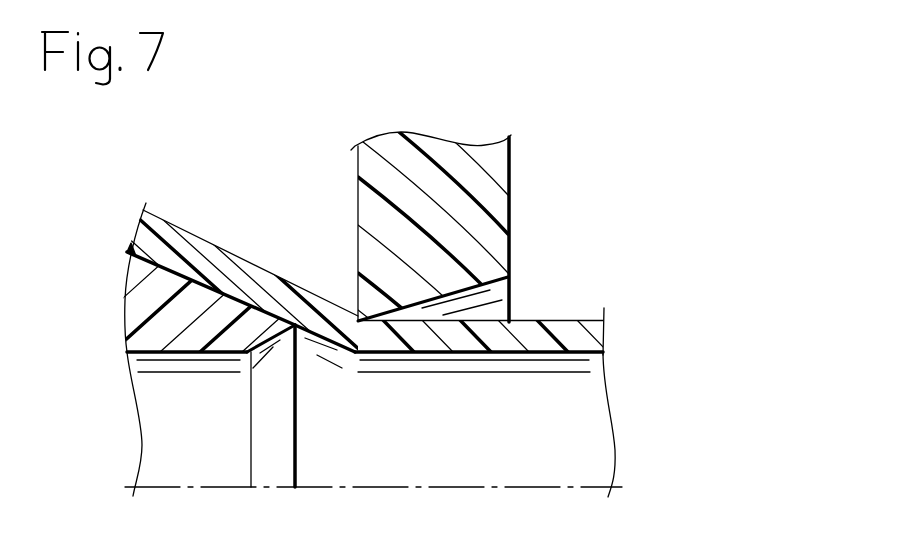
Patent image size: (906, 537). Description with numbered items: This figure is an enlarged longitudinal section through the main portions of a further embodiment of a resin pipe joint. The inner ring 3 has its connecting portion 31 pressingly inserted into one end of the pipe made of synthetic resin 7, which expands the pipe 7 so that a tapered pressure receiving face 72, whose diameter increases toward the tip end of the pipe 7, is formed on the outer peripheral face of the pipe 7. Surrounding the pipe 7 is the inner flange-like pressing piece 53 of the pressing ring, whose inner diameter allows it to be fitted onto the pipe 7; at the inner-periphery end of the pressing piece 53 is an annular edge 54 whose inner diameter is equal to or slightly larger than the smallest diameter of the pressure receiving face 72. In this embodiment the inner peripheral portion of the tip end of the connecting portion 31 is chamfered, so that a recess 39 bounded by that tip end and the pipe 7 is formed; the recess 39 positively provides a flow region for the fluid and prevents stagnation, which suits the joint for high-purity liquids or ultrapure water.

The inner ring 3 is at (120, 310).
The pipe made of synthetic resin 7 is at (578, 316).
The connecting portion 31 is at (126, 268).
The recess 39 is at (297, 340).
The inner flange-like pressing piece 53 is at (505, 168).
The annular edge 54 is at (362, 300).
The pressure receiving face 72 is at (256, 254).